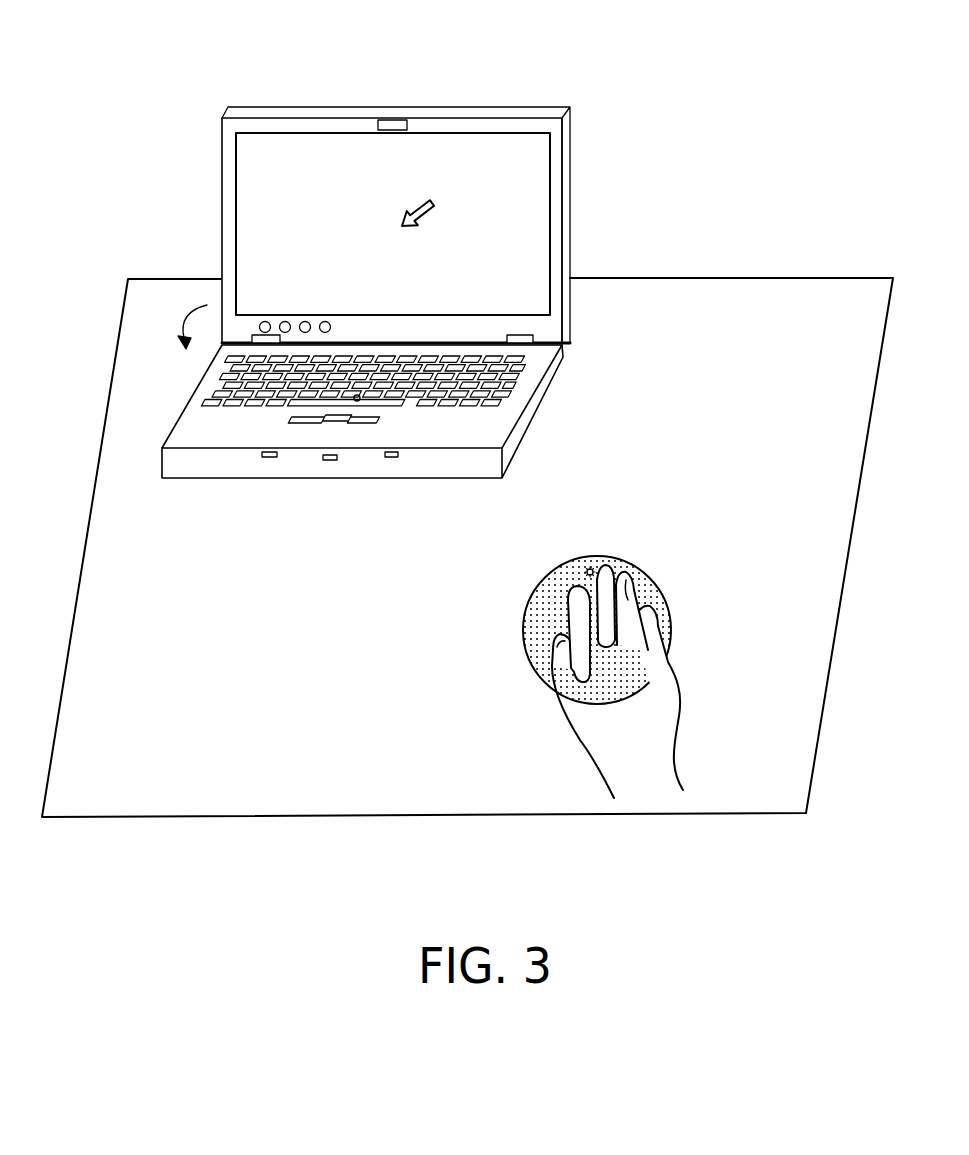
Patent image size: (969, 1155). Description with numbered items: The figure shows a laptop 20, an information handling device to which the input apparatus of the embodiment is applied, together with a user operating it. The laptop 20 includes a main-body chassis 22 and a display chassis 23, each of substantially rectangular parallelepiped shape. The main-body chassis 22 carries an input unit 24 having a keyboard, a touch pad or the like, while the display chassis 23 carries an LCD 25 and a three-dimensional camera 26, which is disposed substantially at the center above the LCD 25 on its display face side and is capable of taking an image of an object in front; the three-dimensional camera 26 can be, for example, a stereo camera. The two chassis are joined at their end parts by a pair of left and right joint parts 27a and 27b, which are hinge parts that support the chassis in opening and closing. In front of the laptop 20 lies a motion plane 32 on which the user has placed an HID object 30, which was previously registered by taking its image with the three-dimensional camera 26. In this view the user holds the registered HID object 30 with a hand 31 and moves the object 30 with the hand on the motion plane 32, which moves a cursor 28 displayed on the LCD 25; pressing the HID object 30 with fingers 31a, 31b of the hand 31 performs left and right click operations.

The laptop 20 is at (593, 100).
The main-body chassis 22 is at (514, 464).
The display chassis 23 is at (396, 195).
The input unit 24 is at (207, 389).
The LCD 25 is at (292, 163).
The 3D camera 26 is at (392, 124).
The joint part 27a is at (262, 334).
The joint part 27b is at (527, 338).
The cursor 28 is at (422, 203).
The HID object 30 is at (667, 597).
The hand 31 is at (587, 638).
The finger 31a is at (582, 616).
The finger 31b is at (627, 568).
The motion plane 32 is at (803, 292).